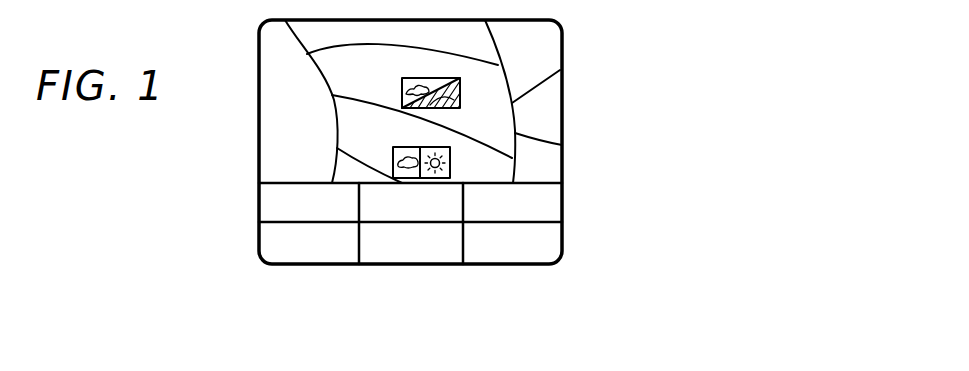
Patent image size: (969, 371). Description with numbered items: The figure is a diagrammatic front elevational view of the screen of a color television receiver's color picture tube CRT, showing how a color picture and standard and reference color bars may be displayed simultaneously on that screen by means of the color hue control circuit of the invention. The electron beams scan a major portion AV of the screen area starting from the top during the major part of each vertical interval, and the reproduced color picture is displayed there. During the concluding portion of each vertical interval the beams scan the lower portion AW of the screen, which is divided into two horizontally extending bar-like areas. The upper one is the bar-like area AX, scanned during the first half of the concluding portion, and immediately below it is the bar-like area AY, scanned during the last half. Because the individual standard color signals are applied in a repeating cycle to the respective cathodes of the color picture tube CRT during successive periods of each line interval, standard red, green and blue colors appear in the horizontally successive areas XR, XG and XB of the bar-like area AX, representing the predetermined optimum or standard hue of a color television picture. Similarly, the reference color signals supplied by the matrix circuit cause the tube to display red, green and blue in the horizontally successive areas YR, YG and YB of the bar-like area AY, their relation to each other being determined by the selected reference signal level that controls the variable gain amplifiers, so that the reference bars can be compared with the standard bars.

The color picture tube CRT is at (563, 40).
The major portion of the screen area AV is at (250, 19).
The lower portion of the screen AW is at (250, 185).
The bar-like area AX is at (573, 183).
The bar-like area AY is at (573, 224).
The standard red area XR is at (309, 202).
The standard green area XG is at (411, 202).
The standard blue area XB is at (512, 202).
The reference red area YR is at (309, 243).
The reference green area YG is at (411, 243).
The reference blue area YB is at (512, 243).